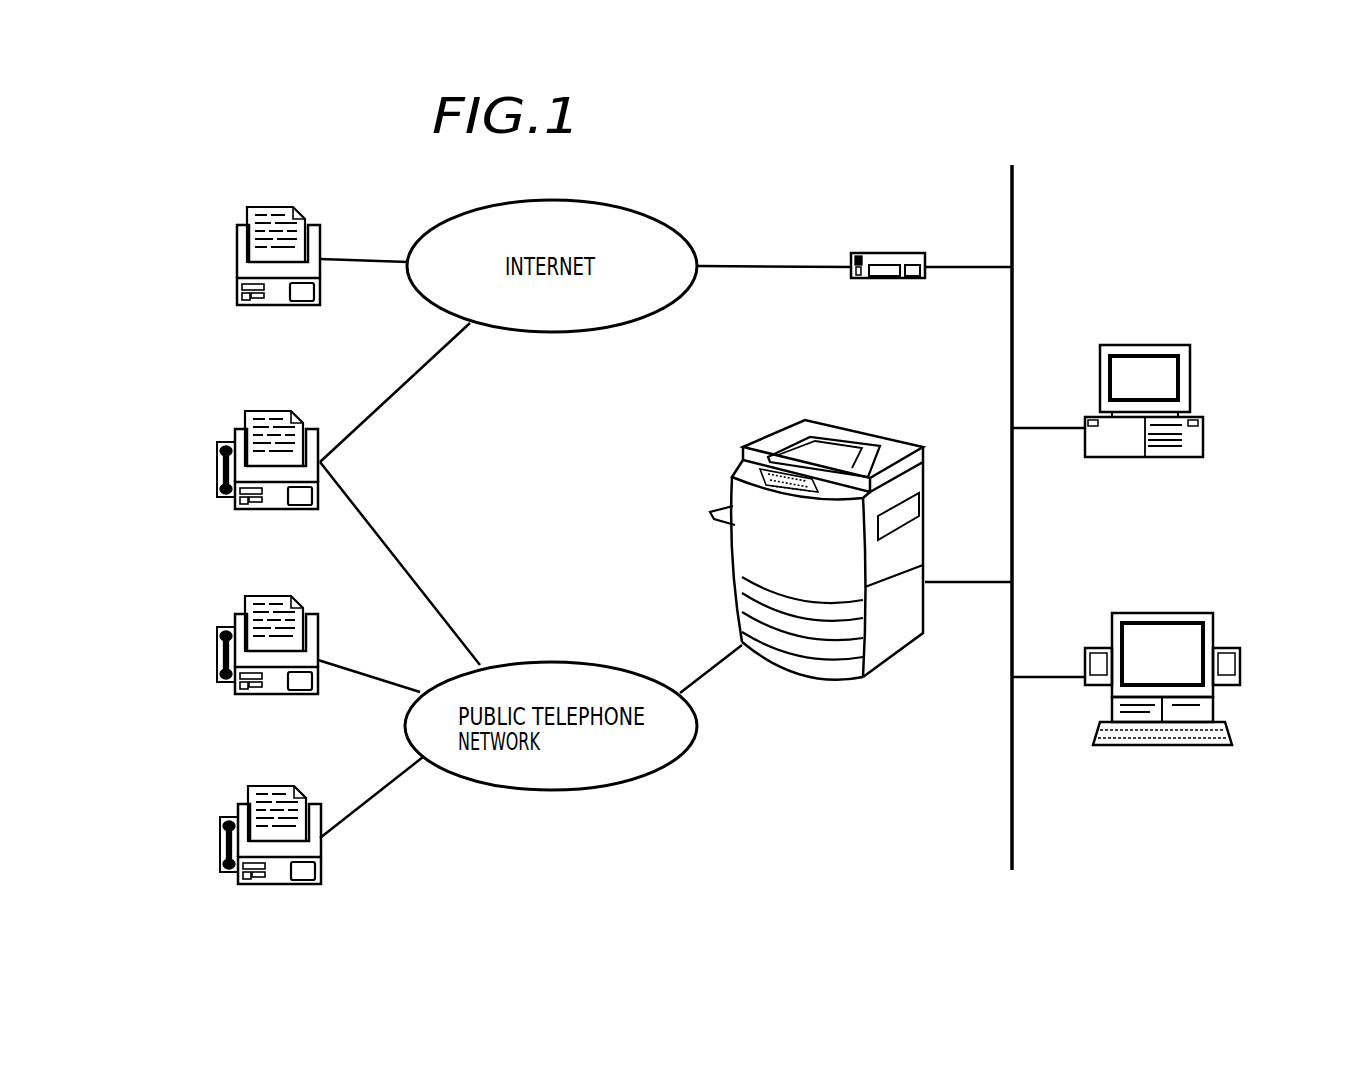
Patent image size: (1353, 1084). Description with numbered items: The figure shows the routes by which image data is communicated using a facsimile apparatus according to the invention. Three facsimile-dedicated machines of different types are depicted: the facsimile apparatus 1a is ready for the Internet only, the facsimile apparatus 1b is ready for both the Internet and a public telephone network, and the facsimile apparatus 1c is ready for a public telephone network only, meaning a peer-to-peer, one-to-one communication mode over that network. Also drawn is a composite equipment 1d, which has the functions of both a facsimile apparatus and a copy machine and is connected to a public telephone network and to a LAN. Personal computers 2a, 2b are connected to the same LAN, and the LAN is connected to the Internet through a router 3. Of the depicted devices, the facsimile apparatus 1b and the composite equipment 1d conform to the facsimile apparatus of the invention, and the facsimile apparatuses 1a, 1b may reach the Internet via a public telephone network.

The facsimile apparatus 1a is at (240, 272).
The facsimile apparatus 1b is at (217, 470).
The facsimile apparatus 1c is at (217, 663).
The composite equipment 1d is at (863, 677).
The personal computer 2a is at (1190, 345).
The personal computer 2b is at (1213, 613).
The router 3 is at (910, 255).